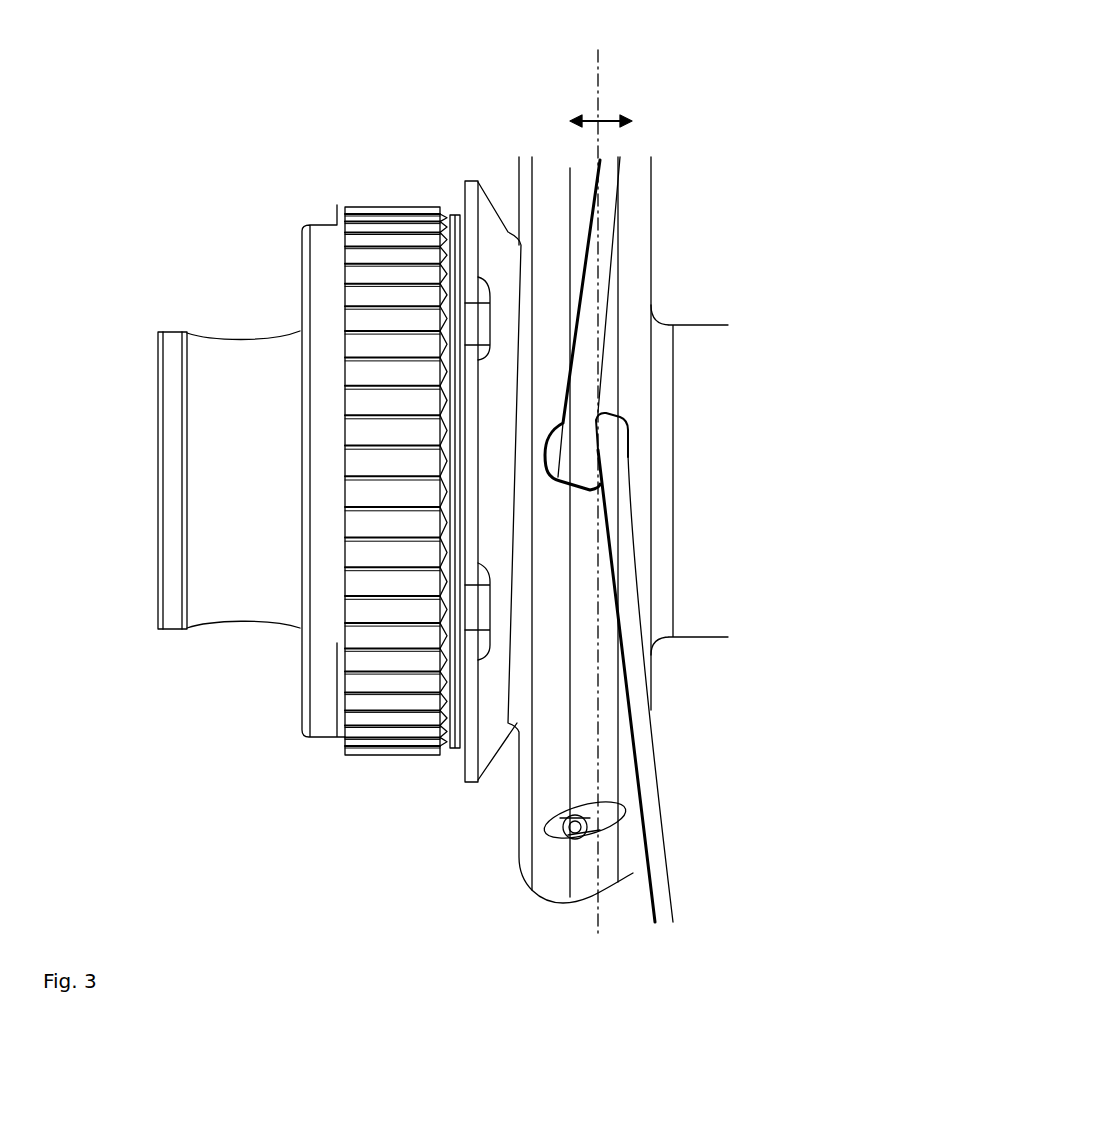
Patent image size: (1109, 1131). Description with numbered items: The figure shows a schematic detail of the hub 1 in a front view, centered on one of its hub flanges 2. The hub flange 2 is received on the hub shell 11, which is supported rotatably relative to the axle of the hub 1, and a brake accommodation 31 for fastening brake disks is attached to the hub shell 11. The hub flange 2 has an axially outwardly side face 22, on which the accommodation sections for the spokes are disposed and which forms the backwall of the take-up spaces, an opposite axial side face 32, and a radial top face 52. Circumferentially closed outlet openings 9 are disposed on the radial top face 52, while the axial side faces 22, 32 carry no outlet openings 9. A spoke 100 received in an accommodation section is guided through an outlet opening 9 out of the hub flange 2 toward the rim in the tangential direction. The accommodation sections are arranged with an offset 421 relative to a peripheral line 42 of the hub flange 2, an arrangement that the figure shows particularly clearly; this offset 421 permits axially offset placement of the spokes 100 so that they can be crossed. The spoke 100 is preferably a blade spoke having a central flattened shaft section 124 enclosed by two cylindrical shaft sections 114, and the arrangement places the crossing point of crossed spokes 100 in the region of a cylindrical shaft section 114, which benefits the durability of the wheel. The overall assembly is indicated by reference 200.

The hub 1 is at (137, 125).
The hub flange 2 is at (520, 872).
The outlet opening 9 is at (627, 428).
The hub shell 11 is at (667, 400).
The axially outwardly side face 22 is at (520, 200).
The brake accommodation 31 is at (370, 739).
The axial side face 32 is at (651, 222).
The peripheral line 42 is at (598, 98).
The offset 421 is at (608, 117).
The radial top face 52 is at (585, 182).
The spoke 100 is at (605, 227).
The cylindrical shaft section 114 is at (622, 452).
The flattened shaft section 124 is at (650, 716).
The assembly 200 is at (870, 65).